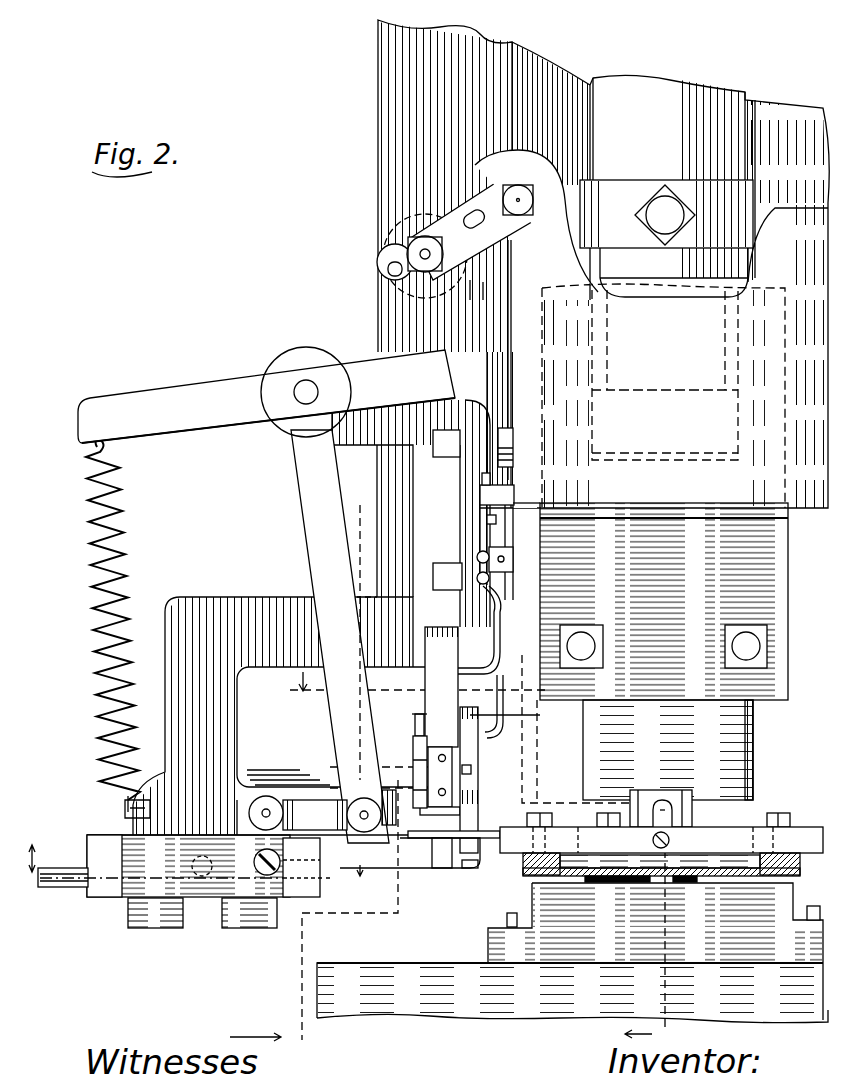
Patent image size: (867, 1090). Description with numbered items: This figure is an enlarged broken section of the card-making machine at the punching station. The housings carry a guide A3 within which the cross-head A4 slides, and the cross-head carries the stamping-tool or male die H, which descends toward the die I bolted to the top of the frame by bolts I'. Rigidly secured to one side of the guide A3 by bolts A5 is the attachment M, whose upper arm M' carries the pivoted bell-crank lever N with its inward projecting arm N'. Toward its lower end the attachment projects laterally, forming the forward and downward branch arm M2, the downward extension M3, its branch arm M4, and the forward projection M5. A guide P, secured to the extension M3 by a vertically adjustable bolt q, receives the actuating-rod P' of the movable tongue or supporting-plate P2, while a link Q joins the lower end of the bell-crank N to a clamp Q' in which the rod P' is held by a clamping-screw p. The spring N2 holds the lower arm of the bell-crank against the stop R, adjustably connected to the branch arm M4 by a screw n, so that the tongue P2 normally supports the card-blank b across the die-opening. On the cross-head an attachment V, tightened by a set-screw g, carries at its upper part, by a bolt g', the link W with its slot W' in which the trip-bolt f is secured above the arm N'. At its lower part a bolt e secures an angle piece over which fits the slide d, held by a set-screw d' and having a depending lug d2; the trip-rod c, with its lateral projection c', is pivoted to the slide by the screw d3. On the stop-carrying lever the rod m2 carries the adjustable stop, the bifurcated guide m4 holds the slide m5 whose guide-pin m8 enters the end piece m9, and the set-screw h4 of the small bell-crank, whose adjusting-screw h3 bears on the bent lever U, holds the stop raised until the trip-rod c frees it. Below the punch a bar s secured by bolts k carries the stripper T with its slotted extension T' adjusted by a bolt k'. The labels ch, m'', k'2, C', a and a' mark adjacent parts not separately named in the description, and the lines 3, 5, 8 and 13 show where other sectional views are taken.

The guide A3 is at (445, 264).
The cross-head A4 is at (778, 115).
The bolts A5 is at (450, 440).
The link W is at (462, 233).
The slot W' is at (469, 288).
The trip-bolt f is at (408, 252).
The bolt g' is at (536, 221).
The set-screw g is at (529, 436).
The attachment V is at (648, 328).
The bell-crank lever N is at (322, 636).
The inward projecting arm N' is at (266, 395).
The spring N2 is at (122, 518).
The attachment M is at (273, 700).
The arm M' is at (411, 513).
The branch arm M2 is at (437, 652).
The downward extension M3 is at (441, 750).
The branch arm M4 is at (297, 772).
The forward projection M5 is at (194, 691).
The bolt e is at (487, 521).
The adjustable slide d is at (540, 575).
The set-screw d' is at (510, 556).
The lug d2 is at (492, 584).
The pivotal screw d3 is at (477, 557).
The trip-rod c is at (491, 630).
The rod bend ch is at (469, 612).
The lateral projection c' is at (496, 715).
The bifurcated guide m4 is at (477, 780).
The slide m5 is at (520, 717).
The guide-pin m8 is at (472, 769).
The end piece m9 is at (470, 780).
The rod m2 is at (481, 857).
The lug m'' is at (453, 886).
The adjusting-screw h3 is at (417, 742).
The set-screw h4 is at (414, 860).
The bolt k' is at (406, 772).
The pin k'2 is at (681, 841).
The bolts k is at (653, 812).
The bent lever U is at (392, 780).
The link Q is at (315, 814).
The clamp Q' is at (261, 905).
The guide P is at (184, 884).
The actuating-rod P' is at (184, 892).
The movable tongue P2 is at (490, 868).
The clamping-screw p is at (327, 898).
The bolt q is at (200, 875).
The screw n is at (434, 868).
The stop R is at (393, 843).
The slide block C' is at (650, 601).
The stamping-tool H is at (668, 750).
The stripper T is at (661, 820).
The slotted upward extension T' is at (661, 796).
The die I is at (572, 953).
The bolts I' is at (537, 913).
The plate a is at (664, 900).
The plate ends a' is at (663, 847).
The card-blank b is at (612, 870).
The bar s is at (597, 841).
The section line 3 is at (314, 774).
The section line 5 is at (595, 846).
The section line 8 is at (534, 739).
The section line 13 is at (198, 850).